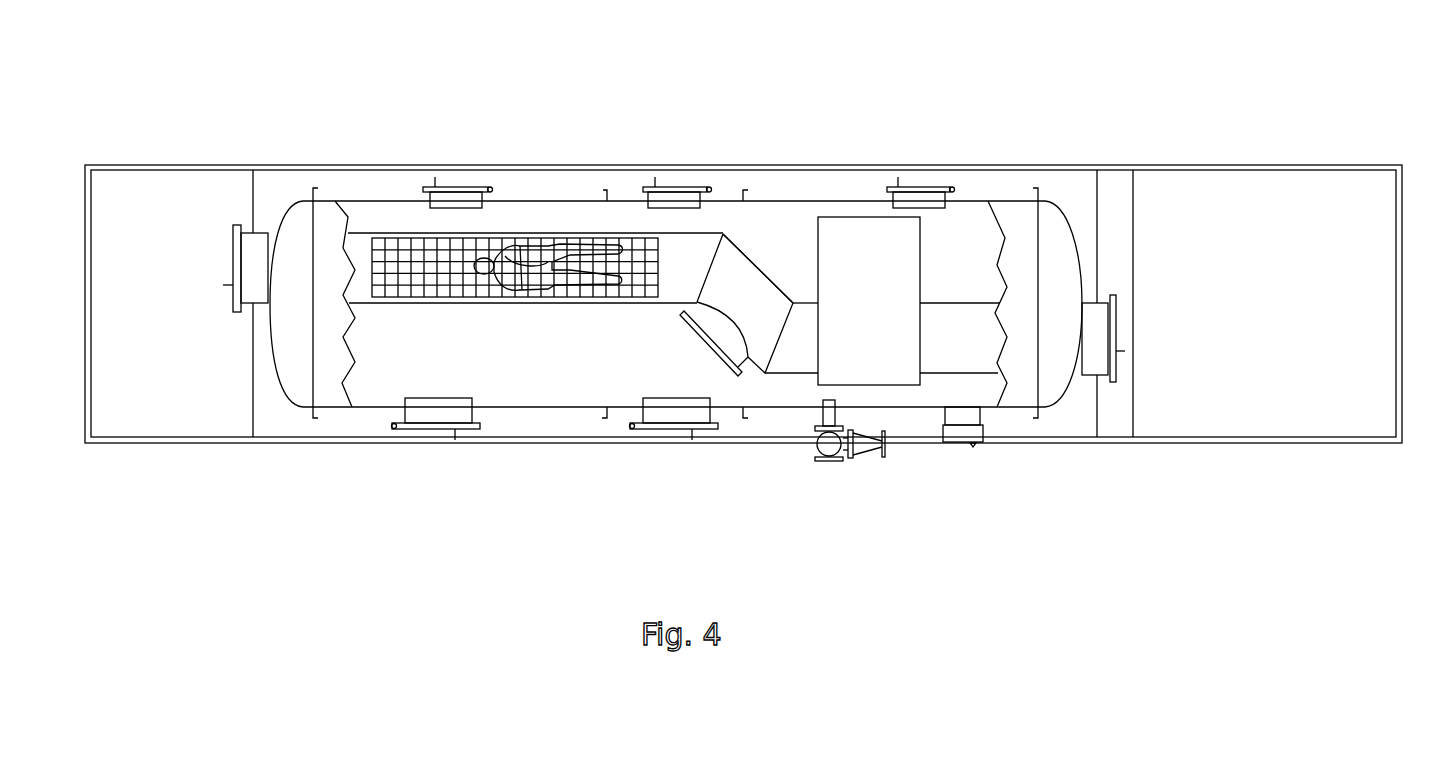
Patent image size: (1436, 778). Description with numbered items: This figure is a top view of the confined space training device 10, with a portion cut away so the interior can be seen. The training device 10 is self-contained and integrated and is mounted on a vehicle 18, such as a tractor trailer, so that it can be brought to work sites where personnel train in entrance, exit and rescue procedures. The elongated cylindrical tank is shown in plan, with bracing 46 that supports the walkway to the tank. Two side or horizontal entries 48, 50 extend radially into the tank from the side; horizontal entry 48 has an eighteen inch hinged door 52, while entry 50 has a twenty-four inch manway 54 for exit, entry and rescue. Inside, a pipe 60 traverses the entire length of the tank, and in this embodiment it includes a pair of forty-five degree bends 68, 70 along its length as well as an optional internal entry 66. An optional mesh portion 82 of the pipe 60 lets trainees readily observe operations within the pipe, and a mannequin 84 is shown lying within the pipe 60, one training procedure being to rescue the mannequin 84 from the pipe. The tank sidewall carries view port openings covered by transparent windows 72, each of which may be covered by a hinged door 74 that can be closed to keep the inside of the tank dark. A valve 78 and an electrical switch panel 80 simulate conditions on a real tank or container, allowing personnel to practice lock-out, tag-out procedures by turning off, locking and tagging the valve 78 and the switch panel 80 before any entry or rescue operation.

The training device 10 is at (1142, 97).
The vehicle 18 is at (1233, 370).
The bracing 46 is at (313, 188).
The horizontal entry 48 is at (405, 413).
The horizontal entry 50 is at (643, 413).
The hinged door 52 is at (433, 430).
The manway 54 is at (672, 430).
The pipe 60 is at (678, 293).
The internal entry 66 is at (705, 342).
The 45° bend 68 is at (714, 255).
The 45° bend 70 is at (793, 305).
The transparent window 72 is at (465, 197).
The hinged door 74 is at (450, 187).
The valve 78 is at (835, 463).
The electrical switch panel 80 is at (960, 445).
The mesh portion 82 is at (400, 262).
The mannequin 84 is at (522, 258).